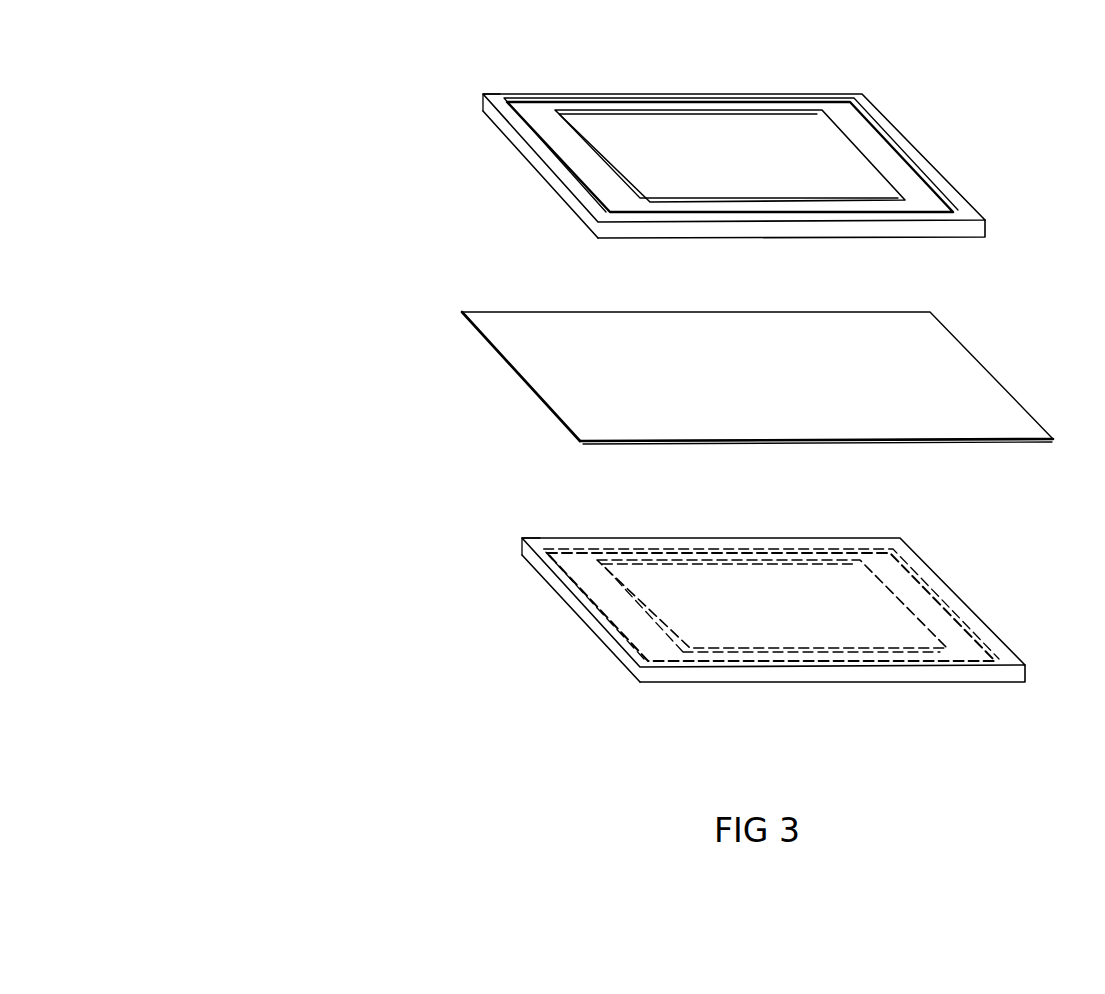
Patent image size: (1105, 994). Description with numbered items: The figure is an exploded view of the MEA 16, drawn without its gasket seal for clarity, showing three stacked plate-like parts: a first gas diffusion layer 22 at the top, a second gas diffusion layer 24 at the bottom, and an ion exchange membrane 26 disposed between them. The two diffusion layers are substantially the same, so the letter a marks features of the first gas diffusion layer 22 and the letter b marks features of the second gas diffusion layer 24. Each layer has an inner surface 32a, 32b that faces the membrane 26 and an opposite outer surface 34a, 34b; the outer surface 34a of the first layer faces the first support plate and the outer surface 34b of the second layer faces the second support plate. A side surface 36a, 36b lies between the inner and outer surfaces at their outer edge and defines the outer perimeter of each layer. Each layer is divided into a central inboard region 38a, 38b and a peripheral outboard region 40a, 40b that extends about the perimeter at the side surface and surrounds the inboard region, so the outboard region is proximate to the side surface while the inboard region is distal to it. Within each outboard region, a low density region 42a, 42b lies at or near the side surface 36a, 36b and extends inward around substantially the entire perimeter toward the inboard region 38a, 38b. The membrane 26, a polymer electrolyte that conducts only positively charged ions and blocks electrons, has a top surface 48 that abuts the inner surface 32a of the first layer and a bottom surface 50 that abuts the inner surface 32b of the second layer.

The MEA 16 is at (330, 432).
The first gas diffusion layer 22 is at (962, 94).
The second gas diffusion layer 24 is at (1008, 561).
The ion exchange membrane 26 is at (1015, 335).
The inner surface of first diffusion layer 32a is at (813, 236).
The inner surface of second diffusion layer 32b is at (810, 580).
The outer surface of first diffusion layer 34a is at (628, 117).
The outer surface of second diffusion layer 34b is at (882, 682).
The side surface of first diffusion layer 36a is at (528, 160).
The side surface of second diffusion layer 36b is at (582, 618).
The inboard region of first diffusion layer 38a is at (777, 118).
The inboard region of second diffusion layer 38b is at (680, 580).
The outboard region of first diffusion layer 40a is at (908, 174).
The outboard region of second diffusion layer 40b is at (647, 642).
The low density region of first diffusion layer 42a is at (495, 97).
The low density region of second diffusion layer 42b is at (535, 542).
The top surface 48 is at (673, 333).
The bottom surface 50 is at (785, 442).